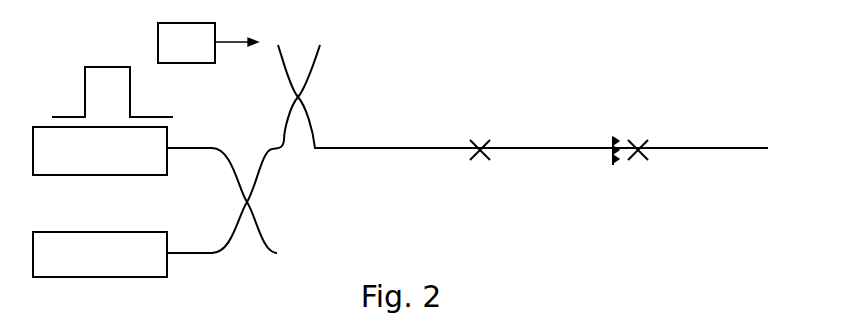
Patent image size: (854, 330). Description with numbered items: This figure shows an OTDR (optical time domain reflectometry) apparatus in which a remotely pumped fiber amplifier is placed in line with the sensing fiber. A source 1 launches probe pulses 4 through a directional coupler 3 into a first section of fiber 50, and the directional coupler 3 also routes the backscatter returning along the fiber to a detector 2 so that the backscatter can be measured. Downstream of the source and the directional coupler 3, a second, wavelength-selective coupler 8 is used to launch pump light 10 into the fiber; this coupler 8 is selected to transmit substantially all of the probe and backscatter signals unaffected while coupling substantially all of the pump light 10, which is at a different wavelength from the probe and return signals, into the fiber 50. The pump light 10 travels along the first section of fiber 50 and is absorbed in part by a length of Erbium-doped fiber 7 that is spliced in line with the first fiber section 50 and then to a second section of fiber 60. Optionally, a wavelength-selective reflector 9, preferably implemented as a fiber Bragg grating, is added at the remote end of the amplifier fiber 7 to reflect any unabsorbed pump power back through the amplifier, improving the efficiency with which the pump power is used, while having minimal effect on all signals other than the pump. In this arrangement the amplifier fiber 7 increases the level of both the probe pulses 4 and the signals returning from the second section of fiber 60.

The source 1 is at (93, 165).
The detector 2 is at (93, 269).
The directional coupler 3 is at (265, 173).
The probe pulses 4 is at (100, 107).
The Erbium-doped fiber 7 is at (570, 148).
The wavelength-selective coupler 8 is at (312, 63).
The wavelength-selective reflector 9 is at (609, 158).
The pump light 10 is at (199, 54).
The first section of fiber 50 is at (450, 148).
The second section of fiber 60 is at (696, 148).